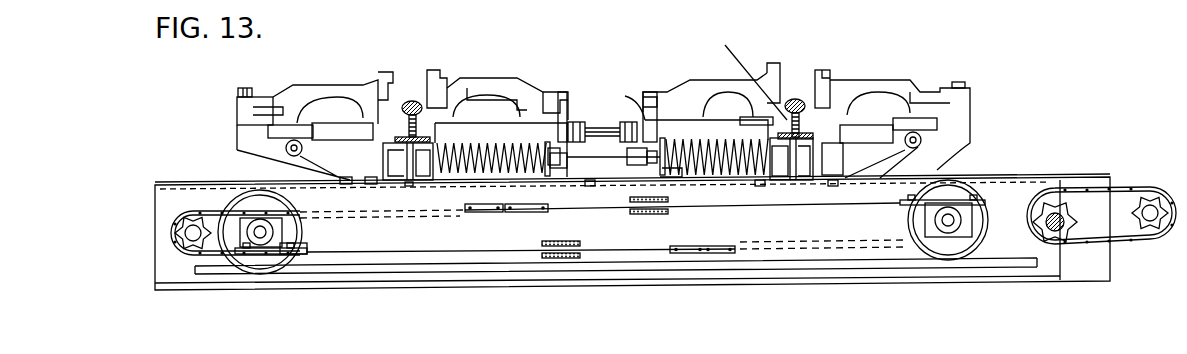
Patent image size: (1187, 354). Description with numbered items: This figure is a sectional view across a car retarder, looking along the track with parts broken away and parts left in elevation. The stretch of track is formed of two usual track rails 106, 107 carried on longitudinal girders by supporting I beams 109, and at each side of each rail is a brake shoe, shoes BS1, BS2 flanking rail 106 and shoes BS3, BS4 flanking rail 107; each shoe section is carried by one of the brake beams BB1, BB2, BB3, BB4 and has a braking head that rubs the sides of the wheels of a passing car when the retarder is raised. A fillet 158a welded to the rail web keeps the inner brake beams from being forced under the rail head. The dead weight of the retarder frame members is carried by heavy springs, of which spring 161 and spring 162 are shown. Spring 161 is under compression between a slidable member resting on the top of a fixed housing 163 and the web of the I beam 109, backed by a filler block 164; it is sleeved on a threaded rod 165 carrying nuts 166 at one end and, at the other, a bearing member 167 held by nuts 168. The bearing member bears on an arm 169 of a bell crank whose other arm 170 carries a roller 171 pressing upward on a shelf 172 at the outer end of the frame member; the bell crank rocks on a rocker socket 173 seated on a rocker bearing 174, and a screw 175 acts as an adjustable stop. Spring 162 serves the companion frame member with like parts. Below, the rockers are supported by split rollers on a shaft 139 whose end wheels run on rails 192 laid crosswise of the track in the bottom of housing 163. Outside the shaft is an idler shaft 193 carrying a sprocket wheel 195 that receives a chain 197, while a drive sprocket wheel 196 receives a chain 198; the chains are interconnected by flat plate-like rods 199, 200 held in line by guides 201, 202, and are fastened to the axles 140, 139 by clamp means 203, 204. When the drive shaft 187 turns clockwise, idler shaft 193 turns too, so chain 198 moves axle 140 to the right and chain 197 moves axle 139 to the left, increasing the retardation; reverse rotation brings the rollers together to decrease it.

The brake beam BB1 is at (323, 85).
The brake beam BB2 is at (480, 80).
The brake beam BB3 is at (710, 80).
The brake beam BB4 is at (877, 80).
The brake shoe BS1 is at (383, 72).
The brake shoe BS2 is at (435, 70).
The brake shoe BS3 is at (773, 63).
The brake shoe BS4 is at (832, 68).
The track rail 106 is at (408, 101).
The track rail 107 is at (795, 100).
The supporting I beam 109 is at (415, 182).
The shaft 139 is at (261, 240).
The axle 140 is at (948, 227).
The fillet 158a is at (440, 135).
The spring 161 is at (518, 143).
The spring 162 is at (675, 143).
The fixed housing 163 is at (200, 185).
The filler block 164 is at (452, 144).
The threaded rod 165 is at (542, 167).
The nuts 166 is at (583, 135).
The bearing member 167 is at (372, 148).
The nuts 168 is at (338, 183).
The bell crank arm 169 is at (380, 185).
The bell crank arm 170 is at (315, 155).
The roller 171 is at (293, 150).
The shelf or support 172 is at (275, 132).
The rocker socket 173 is at (368, 178).
The rocker bearing 174 is at (366, 180).
The screw 175 is at (410, 138).
The drive shaft 187 is at (1055, 232).
The rails 192 is at (217, 278).
The idler shaft 193 is at (193, 236).
The sprocket wheel 195 is at (187, 217).
The drive sprocket wheel 196 is at (1068, 228).
The chain 197 is at (203, 207).
The chain 198 is at (1007, 170).
The flat plate-like rod 199 is at (838, 207).
The flat plate-like rod 200 is at (617, 250).
The guide 201 is at (668, 200).
The guide 202 is at (578, 245).
The clamp means 203 is at (972, 235).
The clamp means 204 is at (300, 252).